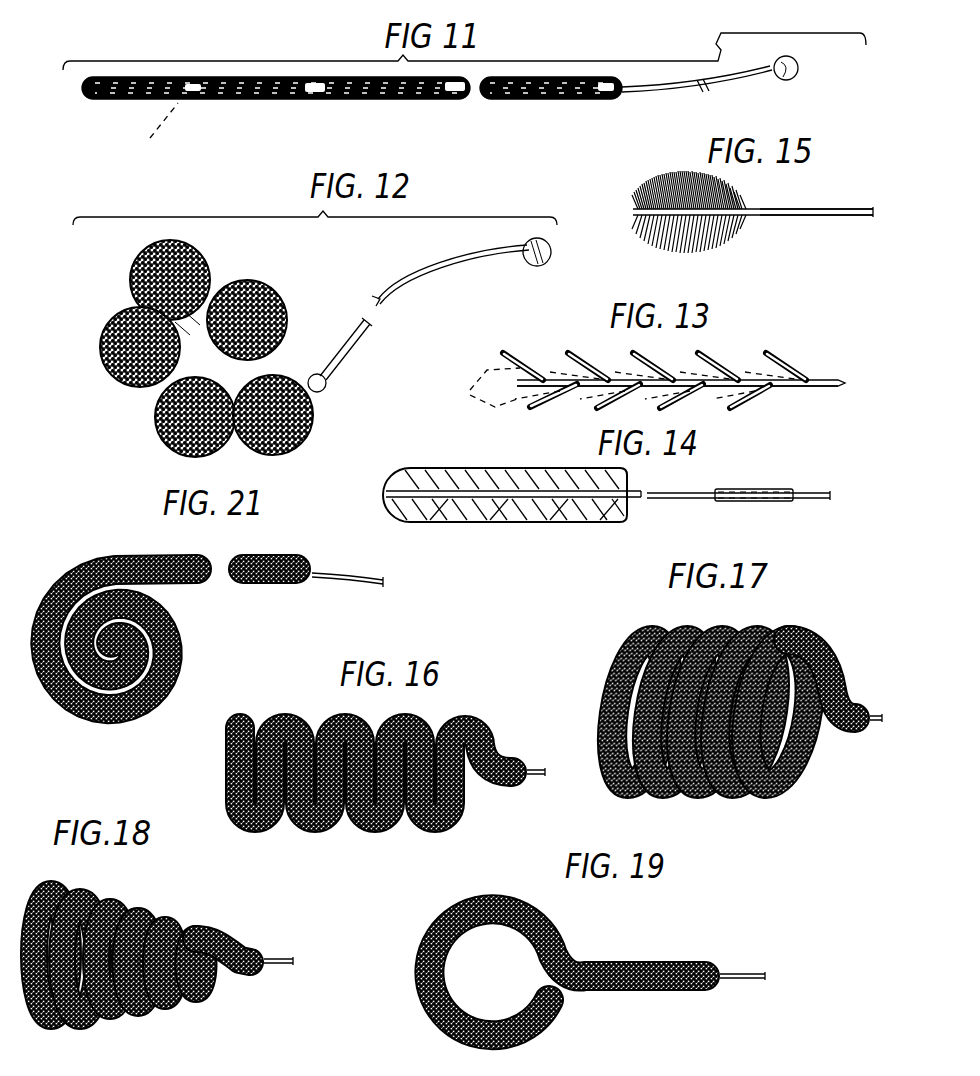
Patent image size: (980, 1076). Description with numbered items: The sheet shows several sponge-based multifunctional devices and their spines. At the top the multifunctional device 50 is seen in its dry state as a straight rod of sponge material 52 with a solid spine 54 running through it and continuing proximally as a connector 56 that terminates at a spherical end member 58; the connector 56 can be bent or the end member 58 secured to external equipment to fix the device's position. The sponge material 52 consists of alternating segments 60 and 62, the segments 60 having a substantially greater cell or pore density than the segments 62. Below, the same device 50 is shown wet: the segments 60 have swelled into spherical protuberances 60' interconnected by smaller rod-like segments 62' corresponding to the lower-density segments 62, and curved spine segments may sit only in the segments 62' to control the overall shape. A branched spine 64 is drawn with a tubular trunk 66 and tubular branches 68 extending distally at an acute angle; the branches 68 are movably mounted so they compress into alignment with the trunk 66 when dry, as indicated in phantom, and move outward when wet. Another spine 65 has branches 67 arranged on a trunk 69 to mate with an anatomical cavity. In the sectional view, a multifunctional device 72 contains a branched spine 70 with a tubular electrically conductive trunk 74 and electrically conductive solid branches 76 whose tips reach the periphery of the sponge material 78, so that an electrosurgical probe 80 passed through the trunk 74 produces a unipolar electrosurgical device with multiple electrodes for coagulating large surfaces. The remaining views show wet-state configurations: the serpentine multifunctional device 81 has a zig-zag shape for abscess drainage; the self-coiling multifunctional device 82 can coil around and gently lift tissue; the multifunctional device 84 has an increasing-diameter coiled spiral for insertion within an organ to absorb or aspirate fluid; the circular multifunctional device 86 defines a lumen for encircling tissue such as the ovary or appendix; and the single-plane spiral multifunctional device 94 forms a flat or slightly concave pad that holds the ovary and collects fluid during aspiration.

In FIG. 11, the multifunctional device 50 is at (236, 103).
In FIG. 12, the multifunctional device 50 is at (112, 392).
In FIG. 11, the sponge material 52 is at (319, 100).
In FIG. 11, the solid spine 54 is at (152, 134).
In FIG. 11, the connector 56 is at (665, 88).
In FIG. 12, the connector 56 is at (385, 296).
In FIG. 11, the spherical end member 58 is at (799, 67).
In FIG. 12, the spherical end member 58 is at (522, 262).
In FIG. 11, the segments 60 is at (349, 110).
In FIG. 11, the segments 62 is at (409, 53).
In FIG. 12, the spherical protuberances 60' is at (212, 350).
In FIG. 12, the rod-like segments 62' is at (188, 344).
In FIG. 13, the spine 64 is at (821, 373).
In FIG. 15, the spine 65 is at (806, 208).
In FIG. 13, the tubular trunk 66 is at (797, 388).
In FIG. 15, the branches 67 is at (696, 242).
In FIG. 13, the tubular branches 68 is at (700, 355).
In FIG. 15, the trunk 69 is at (820, 216).
In FIG. 14, the branched spine 70 is at (438, 488).
In FIG. 14, the multifunctional device 72 is at (569, 526).
In FIG. 14, the tubular electrically conductive trunk 74 is at (627, 492).
In FIG. 14, the electrically conductive solid branches 76 is at (480, 522).
In FIG. 14, the sponge material 78 is at (505, 523).
In FIG. 14, the electrosurgical probe 80 is at (763, 505).
In FIG. 16, the multifunctional device 81 is at (353, 837).
In FIG. 17, the multifunctional device 82 is at (603, 686).
In FIG. 18, the multifunctional device 84 is at (171, 909).
In FIG. 19, the multifunctional device 86 is at (431, 1020).
In FIG. 21, the multifunctional device 94 is at (197, 661).